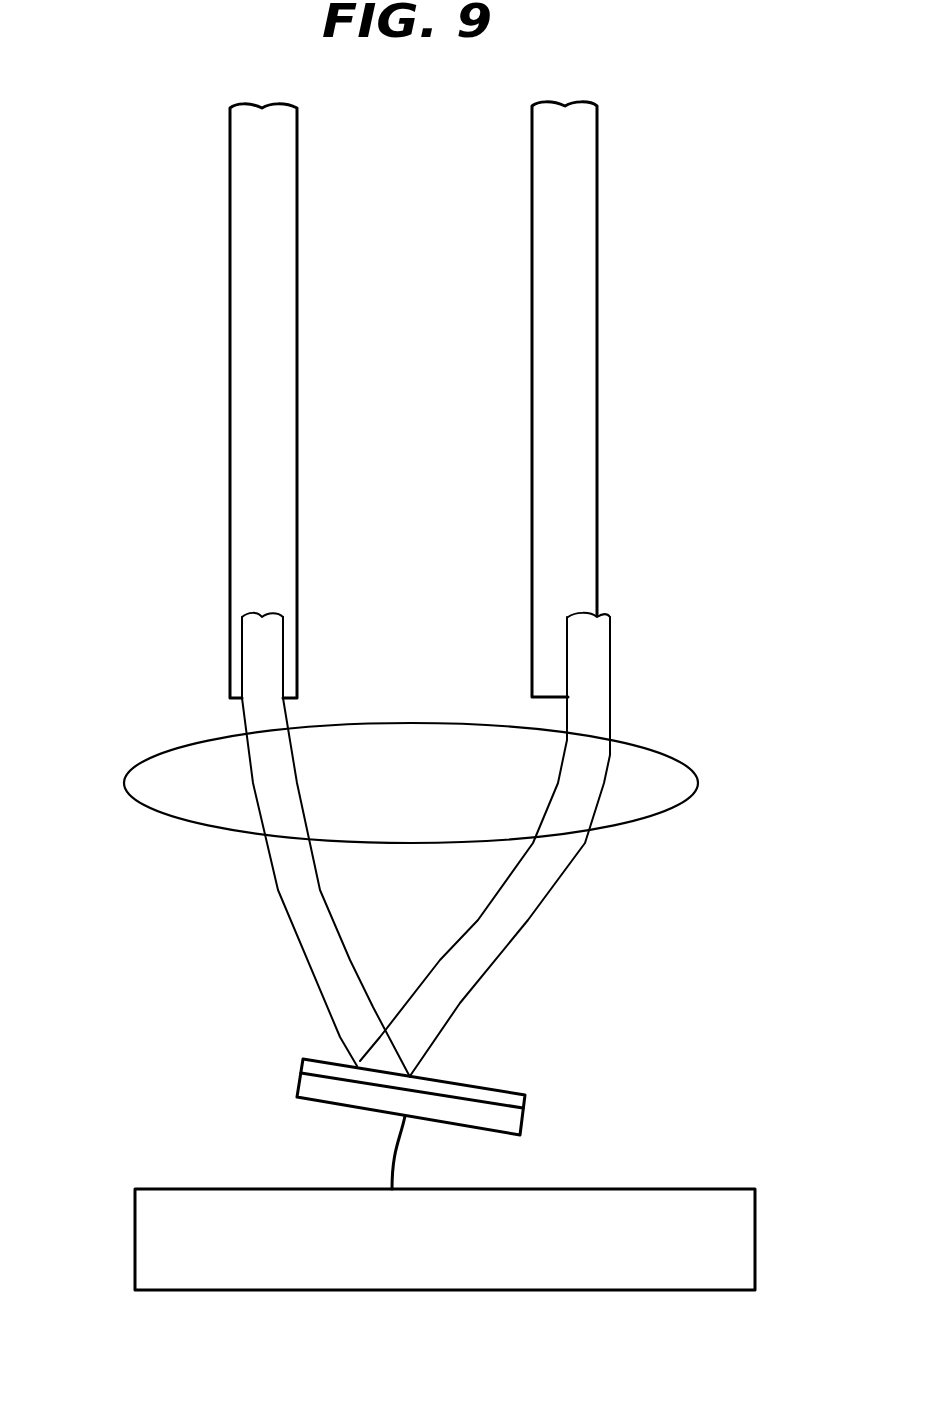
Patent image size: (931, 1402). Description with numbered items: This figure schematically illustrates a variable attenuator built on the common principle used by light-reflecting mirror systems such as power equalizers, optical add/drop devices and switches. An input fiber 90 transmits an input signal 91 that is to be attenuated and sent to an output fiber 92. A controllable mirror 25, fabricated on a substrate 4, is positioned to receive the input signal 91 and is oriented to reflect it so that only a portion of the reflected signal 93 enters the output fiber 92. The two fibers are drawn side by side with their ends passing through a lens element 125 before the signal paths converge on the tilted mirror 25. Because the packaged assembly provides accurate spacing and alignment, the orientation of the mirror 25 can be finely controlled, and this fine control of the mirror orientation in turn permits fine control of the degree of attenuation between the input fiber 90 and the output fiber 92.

The input fiber 90 is at (230, 340).
The output fiber 92 is at (600, 340).
The input signal 91 is at (275, 877).
The reflected signal 93 is at (557, 887).
The lens 125 is at (700, 785).
The controllable mirror 25 is at (512, 1093).
The substrate 4 is at (496, 1273).